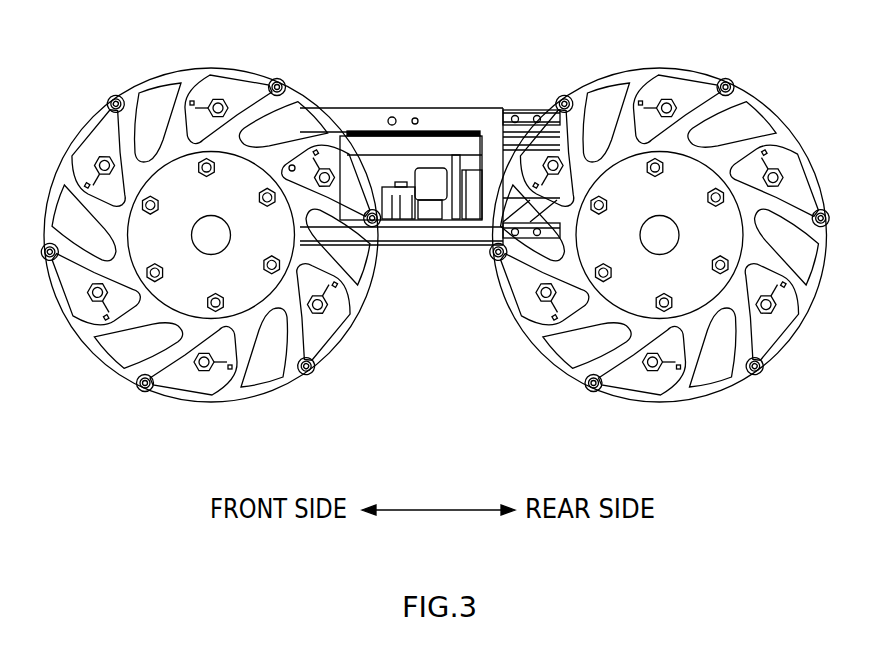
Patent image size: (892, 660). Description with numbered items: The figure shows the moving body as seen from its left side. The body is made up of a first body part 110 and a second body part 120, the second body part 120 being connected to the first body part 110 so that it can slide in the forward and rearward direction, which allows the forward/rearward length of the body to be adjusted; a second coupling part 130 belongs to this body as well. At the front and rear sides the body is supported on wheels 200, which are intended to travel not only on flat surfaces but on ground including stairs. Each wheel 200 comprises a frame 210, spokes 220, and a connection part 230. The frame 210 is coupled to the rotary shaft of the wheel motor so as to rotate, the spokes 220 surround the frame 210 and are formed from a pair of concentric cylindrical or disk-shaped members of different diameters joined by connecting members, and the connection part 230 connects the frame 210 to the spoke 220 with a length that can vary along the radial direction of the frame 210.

The first body part 110 is at (360, 106).
The second body part 120 is at (535, 106).
The second coupling part 130 is at (452, 185).
The wheel 200 is at (238, 268).
The frame 210 is at (211, 235).
The spoke 220 is at (211, 235).
The connection part 230 is at (341, 359).